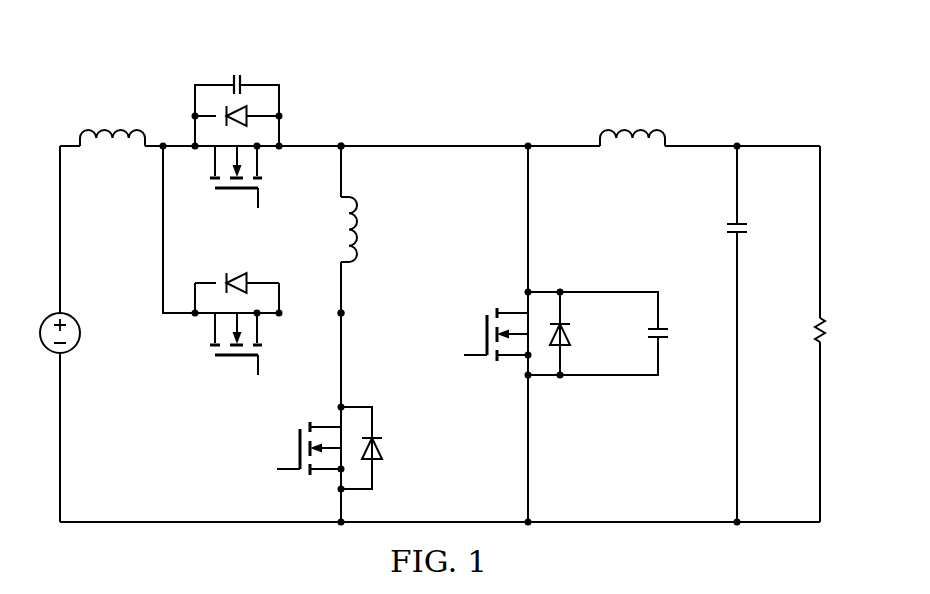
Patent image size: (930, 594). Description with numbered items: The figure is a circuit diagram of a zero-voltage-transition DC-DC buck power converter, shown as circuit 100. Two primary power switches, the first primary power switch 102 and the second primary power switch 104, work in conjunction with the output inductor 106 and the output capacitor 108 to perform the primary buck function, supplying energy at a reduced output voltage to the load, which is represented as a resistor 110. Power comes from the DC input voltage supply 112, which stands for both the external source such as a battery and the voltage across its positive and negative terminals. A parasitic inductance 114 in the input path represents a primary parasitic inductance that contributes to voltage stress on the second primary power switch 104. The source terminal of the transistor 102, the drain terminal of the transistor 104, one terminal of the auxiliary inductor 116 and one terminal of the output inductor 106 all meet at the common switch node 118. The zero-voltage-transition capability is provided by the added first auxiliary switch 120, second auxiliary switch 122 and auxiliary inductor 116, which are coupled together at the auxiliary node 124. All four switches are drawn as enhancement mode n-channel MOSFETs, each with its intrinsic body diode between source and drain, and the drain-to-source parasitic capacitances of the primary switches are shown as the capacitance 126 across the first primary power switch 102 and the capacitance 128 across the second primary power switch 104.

The circuit 100 is at (572, 68).
The primary power switch 102 is at (230, 195).
The primary power switch 104 is at (485, 322).
The output inductor 106 is at (655, 132).
The capacitor 108 is at (722, 230).
The resistor 110 is at (815, 330).
The DC input voltage supply 112 is at (45, 318).
The parasitic inductance 114 is at (85, 131).
The auxiliary inductor 116 is at (357, 205).
The switch node 118 is at (337, 149).
The first auxiliary switch 120 is at (228, 362).
The second auxiliary switch 122 is at (297, 438).
The auxiliary node 124 is at (338, 311).
The capacitance 126 is at (238, 72).
The capacitance 128 is at (645, 330).